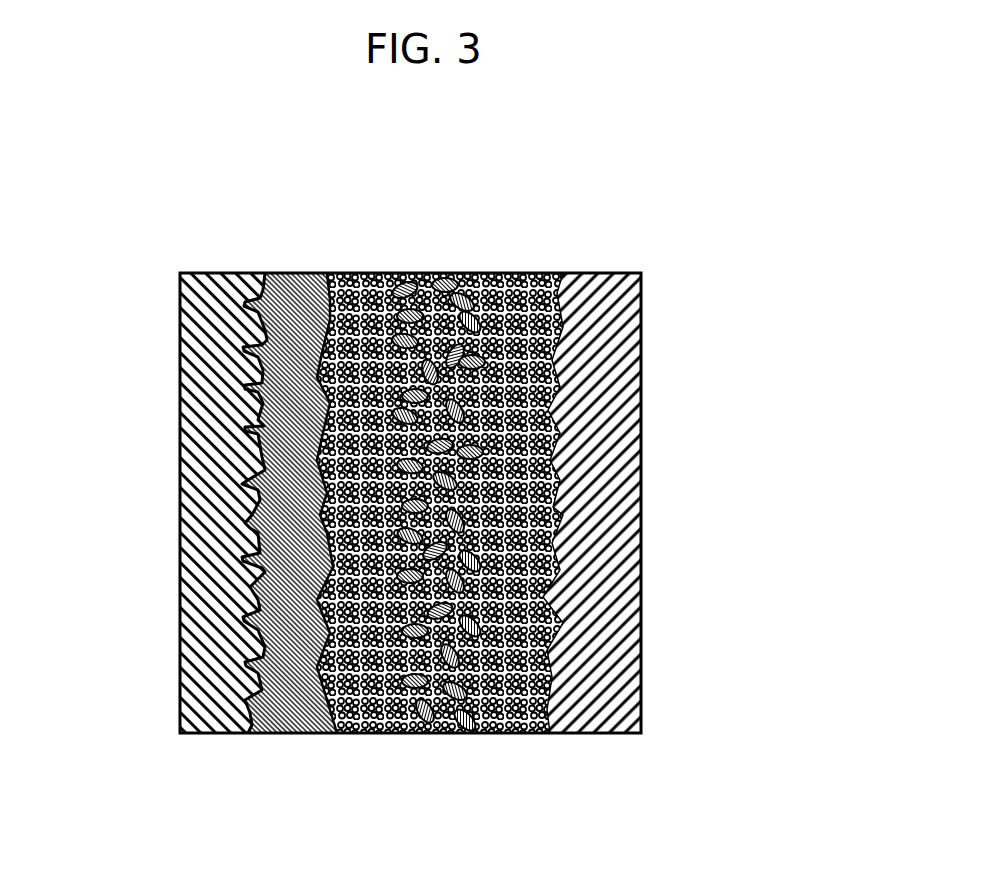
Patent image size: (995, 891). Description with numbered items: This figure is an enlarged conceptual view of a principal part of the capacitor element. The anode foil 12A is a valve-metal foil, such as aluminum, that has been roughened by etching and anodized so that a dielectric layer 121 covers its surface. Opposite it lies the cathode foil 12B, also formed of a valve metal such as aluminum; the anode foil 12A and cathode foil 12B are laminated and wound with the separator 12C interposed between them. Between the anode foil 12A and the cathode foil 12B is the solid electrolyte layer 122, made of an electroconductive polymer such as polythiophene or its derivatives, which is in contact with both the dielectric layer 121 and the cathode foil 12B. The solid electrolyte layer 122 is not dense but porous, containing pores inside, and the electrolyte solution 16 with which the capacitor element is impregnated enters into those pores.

The electrolyte solution 16 is at (463, 275).
The anode foil 12A is at (183, 513).
The cathode foil 12B is at (641, 483).
The separator 12C is at (447, 553).
The dielectric layer 121 is at (305, 728).
The solid electrolyte layer 122 is at (520, 730).